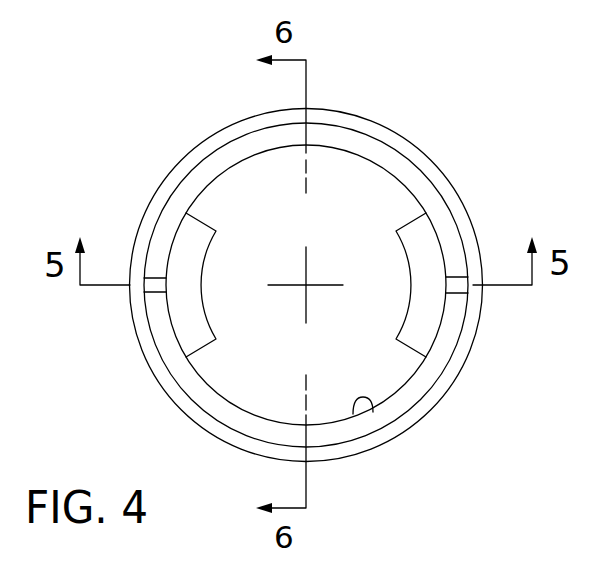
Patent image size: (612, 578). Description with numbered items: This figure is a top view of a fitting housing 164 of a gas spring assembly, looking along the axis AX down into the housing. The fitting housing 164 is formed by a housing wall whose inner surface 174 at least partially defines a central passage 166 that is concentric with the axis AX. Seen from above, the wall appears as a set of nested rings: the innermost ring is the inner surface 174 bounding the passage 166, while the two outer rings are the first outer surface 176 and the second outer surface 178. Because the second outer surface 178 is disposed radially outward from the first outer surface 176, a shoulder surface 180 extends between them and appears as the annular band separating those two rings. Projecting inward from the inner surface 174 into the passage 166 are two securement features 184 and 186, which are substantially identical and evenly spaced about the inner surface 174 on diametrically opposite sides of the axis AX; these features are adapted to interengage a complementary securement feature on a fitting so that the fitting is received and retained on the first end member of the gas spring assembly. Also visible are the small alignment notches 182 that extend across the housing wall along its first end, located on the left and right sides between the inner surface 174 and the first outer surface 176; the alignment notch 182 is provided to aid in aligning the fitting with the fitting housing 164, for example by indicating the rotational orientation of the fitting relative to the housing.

The fitting housing 164 is at (460, 109).
The passage 166 is at (340, 185).
The inner surface 174 is at (373, 412).
The first outer surface 176 is at (428, 396).
The second outer surface 178 is at (479, 331).
The shoulder surface 180 is at (194, 410).
The alignment notch 182 is at (460, 278).
The securement feature 184 is at (197, 276).
The securement feature 186 is at (415, 312).
The axis AX is at (306, 286).